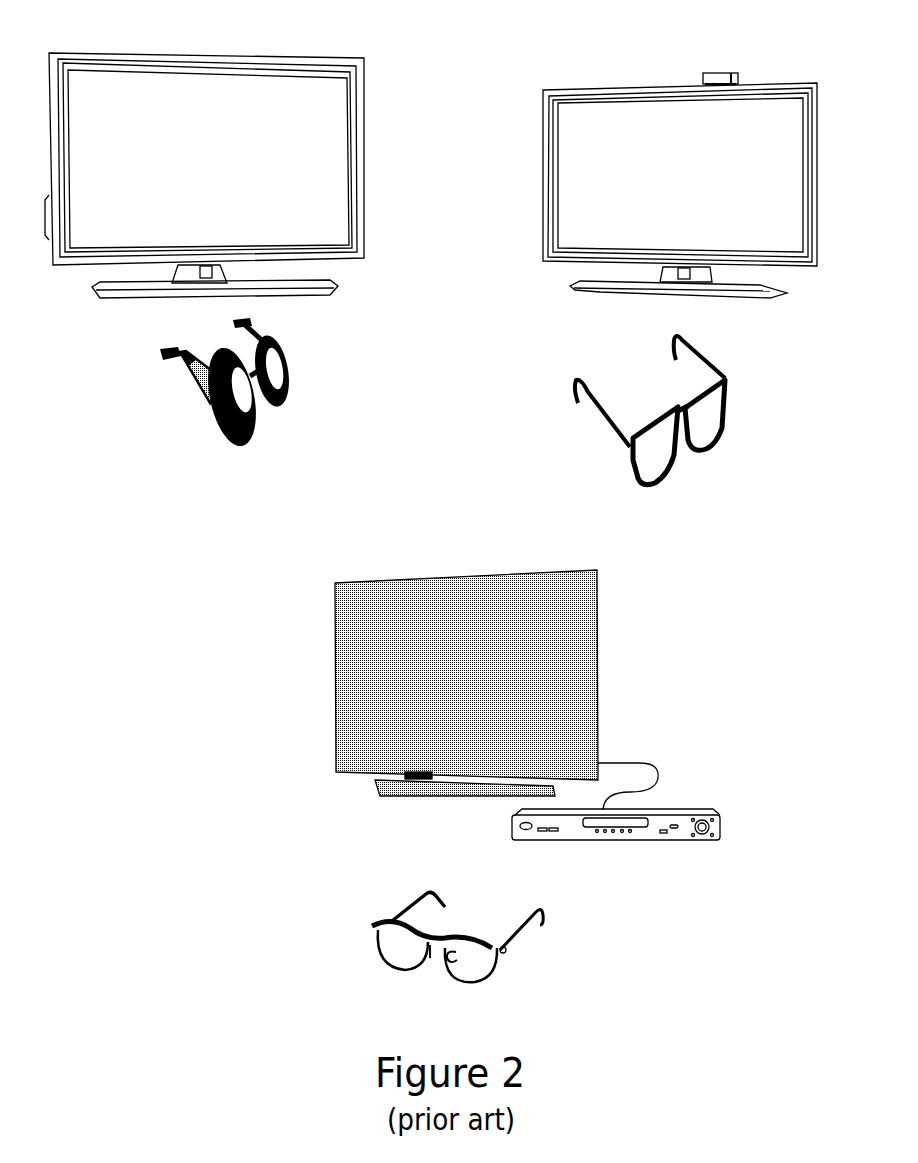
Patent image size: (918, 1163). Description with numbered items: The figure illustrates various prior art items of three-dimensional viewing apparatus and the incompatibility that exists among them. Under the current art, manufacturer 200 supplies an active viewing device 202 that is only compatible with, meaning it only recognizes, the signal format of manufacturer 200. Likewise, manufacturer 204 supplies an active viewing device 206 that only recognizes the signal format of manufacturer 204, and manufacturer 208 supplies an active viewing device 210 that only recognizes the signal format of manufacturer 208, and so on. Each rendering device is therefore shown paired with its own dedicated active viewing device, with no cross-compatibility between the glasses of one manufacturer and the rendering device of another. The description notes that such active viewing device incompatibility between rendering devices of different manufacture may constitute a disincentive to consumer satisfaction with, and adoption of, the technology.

The manufacturer 200 is at (257, 52).
The active viewing device 202 is at (245, 436).
The manufacturer 204 is at (725, 72).
The active viewing device 206 is at (658, 487).
The manufacturer 208 is at (692, 806).
The active viewing device 210 is at (455, 985).